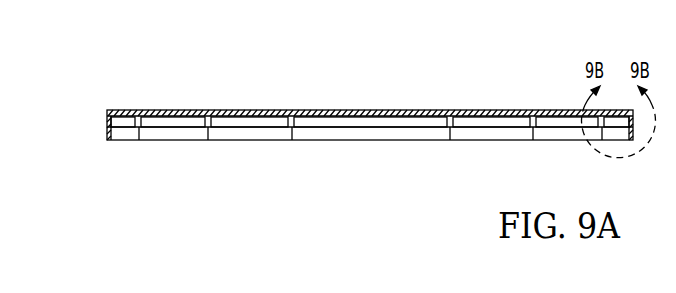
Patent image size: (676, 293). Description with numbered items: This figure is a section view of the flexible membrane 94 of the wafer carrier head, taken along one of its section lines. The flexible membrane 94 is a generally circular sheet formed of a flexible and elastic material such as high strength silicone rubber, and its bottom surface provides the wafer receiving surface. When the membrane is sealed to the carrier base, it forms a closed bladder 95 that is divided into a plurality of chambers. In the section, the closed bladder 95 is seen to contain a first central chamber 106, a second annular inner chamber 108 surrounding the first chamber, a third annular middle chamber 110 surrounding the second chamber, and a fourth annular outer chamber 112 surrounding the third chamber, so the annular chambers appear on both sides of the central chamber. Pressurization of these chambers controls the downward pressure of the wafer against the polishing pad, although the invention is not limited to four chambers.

The closed bladder 95 is at (97, 114).
The flexible membrane 94 is at (446, 131).
The first central chamber 106 is at (351, 131).
The second annular inner chamber 108 is at (249, 131).
The third annular middle chamber 110 is at (186, 131).
The fourth annular outer chamber 112 is at (123, 131).